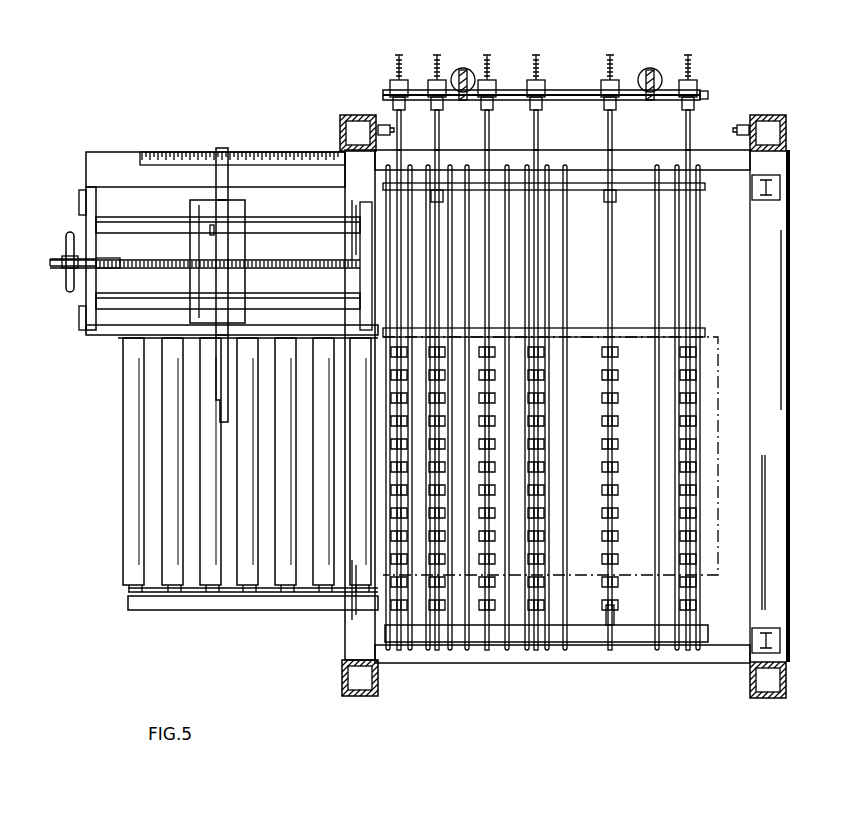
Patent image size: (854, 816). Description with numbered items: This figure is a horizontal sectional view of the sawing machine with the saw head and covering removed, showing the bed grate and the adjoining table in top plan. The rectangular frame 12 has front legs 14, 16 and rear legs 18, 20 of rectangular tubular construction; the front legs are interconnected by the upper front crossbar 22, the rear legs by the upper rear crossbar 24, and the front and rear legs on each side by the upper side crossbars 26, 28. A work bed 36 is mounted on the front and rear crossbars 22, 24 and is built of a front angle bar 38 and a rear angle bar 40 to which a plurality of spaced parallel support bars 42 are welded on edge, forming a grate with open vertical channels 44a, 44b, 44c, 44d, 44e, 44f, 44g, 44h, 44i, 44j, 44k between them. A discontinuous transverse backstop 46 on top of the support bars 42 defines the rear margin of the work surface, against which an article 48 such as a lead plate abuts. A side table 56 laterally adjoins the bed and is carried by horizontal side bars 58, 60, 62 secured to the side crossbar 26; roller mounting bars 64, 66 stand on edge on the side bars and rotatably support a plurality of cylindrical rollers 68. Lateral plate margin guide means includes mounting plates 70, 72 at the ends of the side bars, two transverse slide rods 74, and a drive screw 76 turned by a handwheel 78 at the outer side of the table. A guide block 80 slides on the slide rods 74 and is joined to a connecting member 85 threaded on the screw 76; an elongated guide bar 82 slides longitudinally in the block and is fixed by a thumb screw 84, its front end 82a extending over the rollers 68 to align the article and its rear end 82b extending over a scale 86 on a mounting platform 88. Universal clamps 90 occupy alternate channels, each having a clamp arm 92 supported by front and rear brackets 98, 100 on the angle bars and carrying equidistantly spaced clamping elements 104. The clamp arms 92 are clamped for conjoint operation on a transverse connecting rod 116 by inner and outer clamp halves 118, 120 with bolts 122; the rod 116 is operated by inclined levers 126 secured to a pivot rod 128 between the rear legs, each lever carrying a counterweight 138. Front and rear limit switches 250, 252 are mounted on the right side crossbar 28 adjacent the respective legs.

The rectangular frame 12 is at (792, 474).
The front leg 14 is at (342, 688).
The front leg 16 is at (790, 680).
The rear leg 18 is at (342, 125).
The rear leg 20 is at (790, 128).
The upper front crossbar 22 is at (598, 655).
The upper rear crossbar 24 is at (700, 150).
The upper side crossbar 26 is at (345, 640).
The upper side crossbar 28 is at (790, 598).
The work bed 36 is at (705, 395).
The front angle bar 38 is at (706, 634).
The rear angle bar 40 is at (705, 188).
The support bars 42 is at (545, 446).
The channel 44a is at (390, 646).
The channel 44b is at (410, 646).
The channel 44c is at (428, 646).
The channel 44d is at (450, 646).
The channel 44e is at (467, 646).
The channel 44f is at (507, 646).
The channel 44g is at (527, 646).
The channel 44h is at (547, 646).
The channel 44i is at (657, 646).
The channel 44j is at (677, 646).
The channel 44k is at (698, 646).
The transverse backstop 46 is at (565, 330).
The article 48 is at (765, 455).
The side table 56 is at (153, 610).
The side bar 58 is at (128, 608).
The side bar 60 is at (100, 335).
The side bar 62 is at (96, 194).
The roller mounting bar 64 is at (128, 590).
The roller mounting bar 66 is at (112, 340).
The cylindrical rollers 68 is at (160, 465).
The mounting plate 70 is at (86, 318).
The mounting plate 72 is at (355, 272).
The slide rods 74 is at (152, 233).
The drive screw 76 is at (122, 262).
The handwheel 78 is at (66, 270).
The guide block 80 is at (240, 253).
The guide bar 82 is at (228, 282).
The front end of guide bar 82a is at (216, 405).
The rear end of guide bar 82b is at (216, 176).
The thumb screw 84 is at (210, 233).
The connecting member 85 is at (195, 282).
The scale 86 is at (183, 152).
The mounting platform 88 is at (113, 152).
The universal clamps 90 is at (543, 400).
The clamp arm 92 is at (536, 135).
The front bracket 98 is at (614, 618).
The rear bracket 100 is at (616, 200).
The clamping elements 104 is at (618, 592).
The connecting rod 116 is at (702, 92).
The inner clamp half 118 is at (541, 110).
The outer clamp half 120 is at (555, 95).
The bolts 122 is at (540, 80).
The operating levers 126 is at (466, 88).
The pivot rod 128 is at (382, 128).
The counterweight 138 is at (459, 69).
The front limit switch 250 is at (780, 640).
The rear limit switch 252 is at (780, 185).